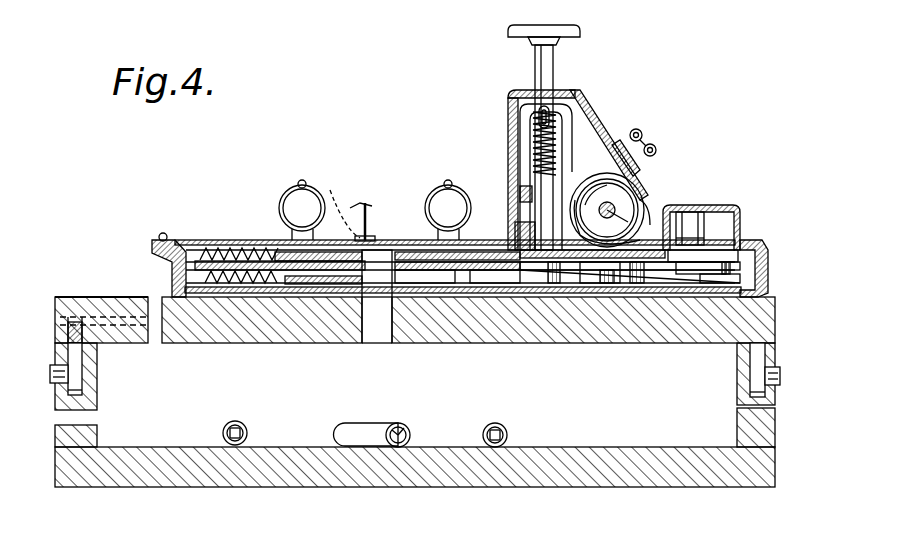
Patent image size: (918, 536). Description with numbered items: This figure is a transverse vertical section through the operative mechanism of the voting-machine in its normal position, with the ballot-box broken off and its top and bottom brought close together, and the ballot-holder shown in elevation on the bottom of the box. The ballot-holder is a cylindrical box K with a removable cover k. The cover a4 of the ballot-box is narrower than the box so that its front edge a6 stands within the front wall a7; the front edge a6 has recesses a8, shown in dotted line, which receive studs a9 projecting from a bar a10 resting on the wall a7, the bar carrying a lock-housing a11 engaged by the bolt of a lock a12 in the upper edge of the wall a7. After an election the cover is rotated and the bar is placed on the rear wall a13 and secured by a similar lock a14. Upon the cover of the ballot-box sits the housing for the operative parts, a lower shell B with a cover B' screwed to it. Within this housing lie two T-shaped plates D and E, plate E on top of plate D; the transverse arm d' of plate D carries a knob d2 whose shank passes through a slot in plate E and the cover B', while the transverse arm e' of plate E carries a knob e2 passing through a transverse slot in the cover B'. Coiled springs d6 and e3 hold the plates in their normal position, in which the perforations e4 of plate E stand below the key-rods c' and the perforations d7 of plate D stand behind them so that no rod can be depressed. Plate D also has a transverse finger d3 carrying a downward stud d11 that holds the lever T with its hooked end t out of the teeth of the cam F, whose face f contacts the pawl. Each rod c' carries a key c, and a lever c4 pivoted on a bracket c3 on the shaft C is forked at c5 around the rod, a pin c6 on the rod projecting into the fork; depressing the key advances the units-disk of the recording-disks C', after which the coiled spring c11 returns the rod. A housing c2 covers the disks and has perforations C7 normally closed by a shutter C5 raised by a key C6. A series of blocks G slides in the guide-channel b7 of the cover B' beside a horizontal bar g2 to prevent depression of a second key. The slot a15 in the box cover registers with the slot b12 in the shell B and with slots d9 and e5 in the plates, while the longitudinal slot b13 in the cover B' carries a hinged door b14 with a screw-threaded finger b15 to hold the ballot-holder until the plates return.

The cover a4 is at (594, 300).
The front edge a6 is at (105, 297).
The front wall a7 is at (97, 378).
The recesses a8 is at (120, 318).
The studs a9 is at (75, 322).
The bar a10 is at (58, 297).
The lock-housing a11 is at (66, 333).
The lock a12 is at (70, 362).
The rear wall a13 is at (776, 362).
The lock a14 is at (770, 384).
The slot a15 is at (374, 330).
The shell B is at (159, 251).
The cover B' is at (453, 219).
The guide-channel b7 is at (510, 182).
The slot b12 is at (376, 300).
The longitudinal slot b13 is at (368, 236).
The door b14 is at (370, 212).
The screw-threaded finger b15 is at (360, 205).
The key c is at (559, 35).
The rod c' is at (564, 147).
The housing c2 is at (606, 130).
The bracket c3 is at (566, 172).
The lever c4 is at (530, 100).
The fork c5 is at (551, 115).
The pin c6 is at (512, 118).
The coiled spring c11 is at (533, 132).
The shaft C is at (617, 215).
The recording-disks C' is at (658, 214).
The shutter C5 is at (650, 165).
The key C6 is at (642, 136).
The perforations C7 is at (645, 192).
The plate D is at (485, 300).
The transverse arm d' is at (323, 330).
The knob d2 is at (445, 186).
The transverse finger d3 is at (658, 300).
The coiled spring d6 is at (262, 266).
The perforations d7 is at (556, 300).
The slot d9 is at (418, 300).
The stud d11 is at (620, 300).
The plate E is at (404, 262).
The transverse arm e' is at (310, 230).
The knob e2 is at (306, 190).
The coiled spring e3 is at (240, 252).
The perforations e4 is at (537, 300).
The slot e5 is at (430, 300).
The cam F is at (722, 230).
The face f is at (731, 256).
The cylinder f' is at (725, 231).
The blocks G is at (530, 300).
The horizontal bar g2 is at (515, 240).
The cylindrical box K is at (242, 425).
The removable cover k is at (410, 435).
The hooked end t is at (752, 278).
The lever T is at (757, 292).